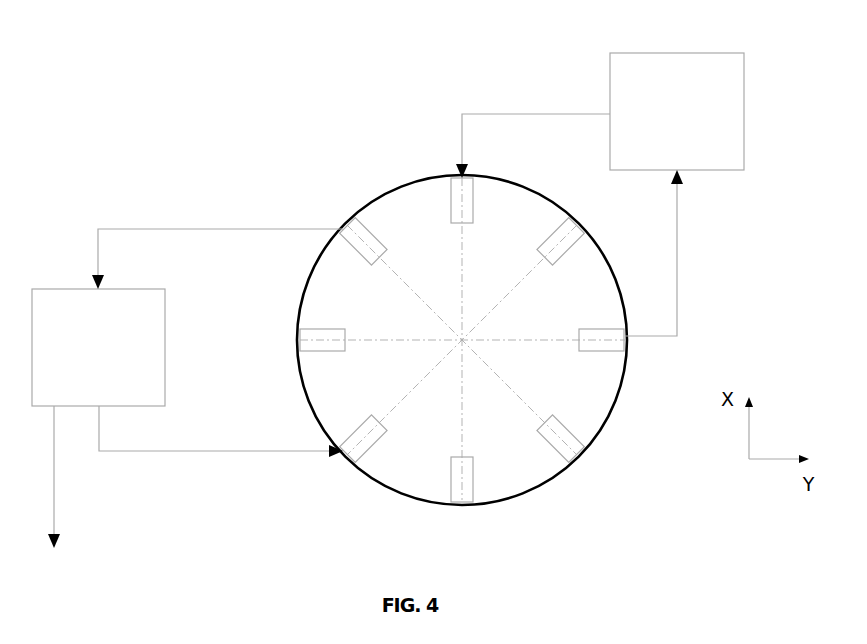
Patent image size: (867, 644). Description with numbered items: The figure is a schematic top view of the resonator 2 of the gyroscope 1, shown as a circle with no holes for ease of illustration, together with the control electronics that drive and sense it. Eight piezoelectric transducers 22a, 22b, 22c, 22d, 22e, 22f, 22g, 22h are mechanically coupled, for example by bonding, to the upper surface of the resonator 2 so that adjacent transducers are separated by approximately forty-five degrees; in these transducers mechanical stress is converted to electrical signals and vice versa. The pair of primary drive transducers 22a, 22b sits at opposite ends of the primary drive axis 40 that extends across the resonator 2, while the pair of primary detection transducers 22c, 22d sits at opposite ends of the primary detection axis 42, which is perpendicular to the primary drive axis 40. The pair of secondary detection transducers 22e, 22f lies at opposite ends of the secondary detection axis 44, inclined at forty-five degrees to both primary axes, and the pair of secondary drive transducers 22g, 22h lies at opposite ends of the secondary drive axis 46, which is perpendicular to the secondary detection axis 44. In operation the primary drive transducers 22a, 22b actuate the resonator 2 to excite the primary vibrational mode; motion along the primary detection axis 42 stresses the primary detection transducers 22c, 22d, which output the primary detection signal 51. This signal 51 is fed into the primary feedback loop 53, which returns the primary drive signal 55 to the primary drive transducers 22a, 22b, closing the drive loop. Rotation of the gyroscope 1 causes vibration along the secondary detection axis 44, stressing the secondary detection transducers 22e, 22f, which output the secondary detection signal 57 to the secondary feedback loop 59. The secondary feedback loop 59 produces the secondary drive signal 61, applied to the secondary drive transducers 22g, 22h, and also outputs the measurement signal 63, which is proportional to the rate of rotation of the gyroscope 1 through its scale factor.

The gyroscope 1 is at (344, 150).
The resonator 2 is at (305, 282).
The primary drive transducer 22a is at (453, 177).
The primary drive transducer 22b is at (452, 500).
The primary detection transducer 22c is at (626, 340).
The primary detection transducer 22d is at (300, 338).
The secondary detection transducer 22e is at (577, 446).
The secondary detection transducer 22f is at (343, 228).
The secondary drive transducer 22g is at (578, 230).
The secondary drive transducer 22h is at (343, 456).
The primary drive axis 40 is at (465, 240).
The primary detection axis 42 is at (545, 343).
The secondary detection axis 44 is at (530, 410).
The secondary drive axis 46 is at (515, 290).
The primary detection signal 51 is at (678, 258).
The primary feedback loop 53 is at (710, 53).
The primary drive signal 55 is at (520, 114).
The secondary detection signal 57 is at (165, 229).
The secondary feedback loop 59 is at (72, 289).
The secondary drive signal 61 is at (140, 452).
The measurement signal 63 is at (55, 495).